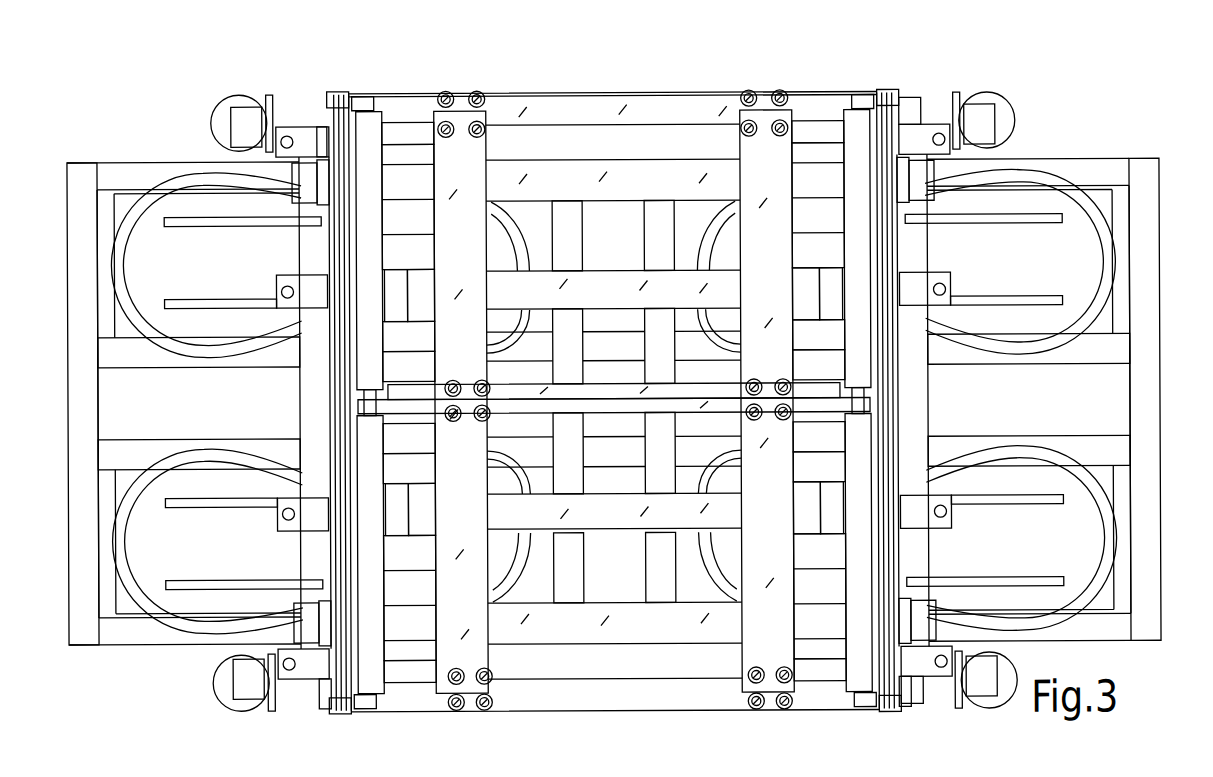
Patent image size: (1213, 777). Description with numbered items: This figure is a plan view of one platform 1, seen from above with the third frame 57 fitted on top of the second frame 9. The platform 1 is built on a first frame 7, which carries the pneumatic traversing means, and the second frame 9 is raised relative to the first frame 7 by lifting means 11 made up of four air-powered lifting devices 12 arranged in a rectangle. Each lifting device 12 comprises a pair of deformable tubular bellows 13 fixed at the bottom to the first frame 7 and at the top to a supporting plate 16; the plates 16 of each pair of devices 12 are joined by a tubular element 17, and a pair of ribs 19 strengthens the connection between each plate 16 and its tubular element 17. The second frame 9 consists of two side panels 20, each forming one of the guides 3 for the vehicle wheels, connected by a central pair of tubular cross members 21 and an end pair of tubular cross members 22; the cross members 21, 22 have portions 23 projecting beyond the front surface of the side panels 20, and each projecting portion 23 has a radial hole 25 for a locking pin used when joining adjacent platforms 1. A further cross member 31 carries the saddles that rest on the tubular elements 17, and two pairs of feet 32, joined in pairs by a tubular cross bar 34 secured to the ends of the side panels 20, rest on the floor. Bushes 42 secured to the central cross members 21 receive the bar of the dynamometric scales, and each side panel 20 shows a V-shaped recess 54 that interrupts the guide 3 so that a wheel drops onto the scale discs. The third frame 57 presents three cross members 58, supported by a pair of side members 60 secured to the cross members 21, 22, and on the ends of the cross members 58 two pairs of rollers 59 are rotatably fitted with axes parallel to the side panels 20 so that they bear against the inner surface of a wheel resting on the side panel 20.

The platform 1 is at (110, 81).
The guides 3 is at (332, 248).
The first frame 7 is at (117, 667).
The second frame 9 is at (332, 724).
The lifting means 11 is at (138, 188).
The lifting devices 12 is at (228, 252).
The tubular bellows 13 is at (160, 190).
The supporting plate 16 is at (153, 320).
The tubular element 17 is at (308, 405).
The ribs 19 is at (168, 222).
The side panels 20 is at (333, 692).
The cross members 21 is at (623, 285).
The cross members 22 is at (818, 138).
The projecting portions 23 is at (302, 130).
The radial hole 25 is at (262, 108).
The cross member 31 is at (300, 183).
The feet 32 is at (230, 98).
The cross bar 34 is at (917, 95).
The bushes 42 is at (395, 292).
The V-shaped recess 54 is at (332, 412).
The third frame 57 is at (655, 92).
The cross members 58 is at (584, 108).
The rollers 59 is at (368, 228).
The side members 60 is at (468, 172).